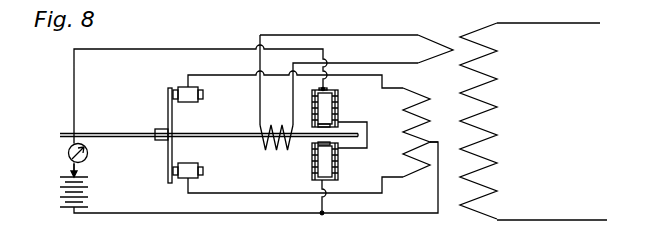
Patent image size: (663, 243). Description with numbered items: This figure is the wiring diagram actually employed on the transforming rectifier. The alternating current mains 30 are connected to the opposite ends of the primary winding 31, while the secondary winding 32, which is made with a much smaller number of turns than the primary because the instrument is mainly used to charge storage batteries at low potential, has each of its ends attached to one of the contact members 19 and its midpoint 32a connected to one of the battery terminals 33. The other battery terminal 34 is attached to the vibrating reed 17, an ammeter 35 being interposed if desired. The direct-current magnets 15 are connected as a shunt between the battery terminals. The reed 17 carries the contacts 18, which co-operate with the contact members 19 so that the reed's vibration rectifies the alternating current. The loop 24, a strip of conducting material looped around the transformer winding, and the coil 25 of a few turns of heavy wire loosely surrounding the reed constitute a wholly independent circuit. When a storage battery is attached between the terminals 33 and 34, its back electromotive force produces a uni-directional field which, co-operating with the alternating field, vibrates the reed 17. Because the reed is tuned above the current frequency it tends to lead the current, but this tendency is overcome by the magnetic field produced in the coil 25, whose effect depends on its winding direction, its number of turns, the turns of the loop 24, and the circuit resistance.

The direct-current magnets 15 is at (338, 108).
The vibrating reed 17 is at (111, 133).
The contacts 18 is at (168, 97).
The contact members 19 is at (192, 103).
The loop 24 is at (424, 40).
The coil 25 is at (277, 153).
The alternating current mains 30 is at (586, 24).
The primary winding 31 is at (498, 110).
The secondary winding 32 is at (406, 130).
The midpoint 32a is at (426, 141).
The battery terminal 33 is at (72, 212).
The battery terminal 34 is at (72, 174).
The ammeter 35 is at (90, 159).